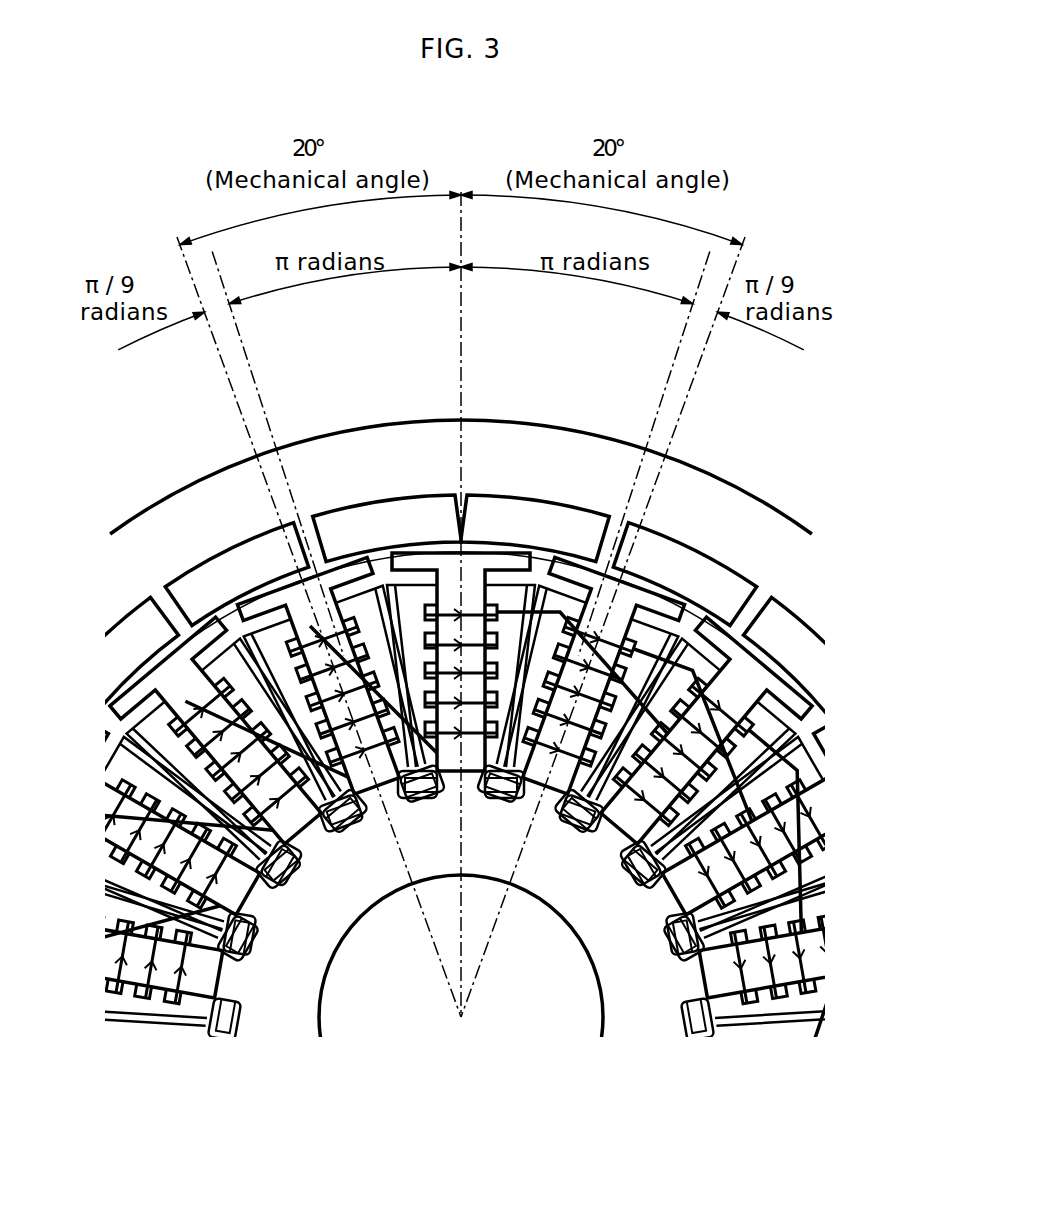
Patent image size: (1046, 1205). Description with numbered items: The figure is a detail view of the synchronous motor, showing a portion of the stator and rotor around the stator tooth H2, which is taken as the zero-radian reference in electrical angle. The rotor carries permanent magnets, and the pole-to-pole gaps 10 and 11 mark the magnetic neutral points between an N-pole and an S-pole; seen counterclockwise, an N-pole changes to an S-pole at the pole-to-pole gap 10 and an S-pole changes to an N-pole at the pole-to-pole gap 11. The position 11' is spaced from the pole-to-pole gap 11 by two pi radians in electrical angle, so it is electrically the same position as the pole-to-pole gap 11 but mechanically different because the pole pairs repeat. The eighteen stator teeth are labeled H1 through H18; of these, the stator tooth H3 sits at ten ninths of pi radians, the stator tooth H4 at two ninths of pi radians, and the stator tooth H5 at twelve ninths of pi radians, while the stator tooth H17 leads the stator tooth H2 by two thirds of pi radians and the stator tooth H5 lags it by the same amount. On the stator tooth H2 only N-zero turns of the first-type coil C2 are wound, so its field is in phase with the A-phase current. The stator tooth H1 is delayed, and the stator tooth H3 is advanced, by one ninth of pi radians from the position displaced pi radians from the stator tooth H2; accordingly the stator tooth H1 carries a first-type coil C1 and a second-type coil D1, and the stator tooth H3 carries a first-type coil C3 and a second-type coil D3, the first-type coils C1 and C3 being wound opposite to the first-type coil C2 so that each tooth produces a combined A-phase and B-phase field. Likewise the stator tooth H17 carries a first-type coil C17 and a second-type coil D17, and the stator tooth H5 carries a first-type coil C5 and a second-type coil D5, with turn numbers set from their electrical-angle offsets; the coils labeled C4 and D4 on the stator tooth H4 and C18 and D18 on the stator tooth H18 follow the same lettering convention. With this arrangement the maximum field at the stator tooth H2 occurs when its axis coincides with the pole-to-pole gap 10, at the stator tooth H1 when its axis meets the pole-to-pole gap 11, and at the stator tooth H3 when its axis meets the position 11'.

The pole-to-pole gap 10 is at (467, 565).
The pole-to-pole gap 11 is at (603, 627).
The pole-to-pole gap 11' is at (319, 627).
The stator tooth H1 is at (632, 622).
The stator tooth H2 is at (474, 597).
The stator tooth H3 is at (280, 580).
The stator tooth H4 is at (162, 655).
The stator tooth H5 is at (108, 790).
The stator tooth H17 is at (795, 800).
The stator tooth H18 is at (750, 660).
The first-type coil C1 is at (633, 645).
The first-type coil C2 is at (493, 608).
The first-type coil C3 is at (222, 615).
The coil C4 is at (170, 686).
The first-type coil C5 is at (110, 824).
The first-type coil C17 is at (800, 838).
The coil C18 is at (770, 672).
The second-type coil D1 is at (655, 660).
The second-type coil D3 is at (200, 630).
The insulator D4 is at (135, 736).
The second-type coil D5 is at (145, 870).
The second-type coil D17 is at (800, 886).
The insulator D18 is at (760, 720).